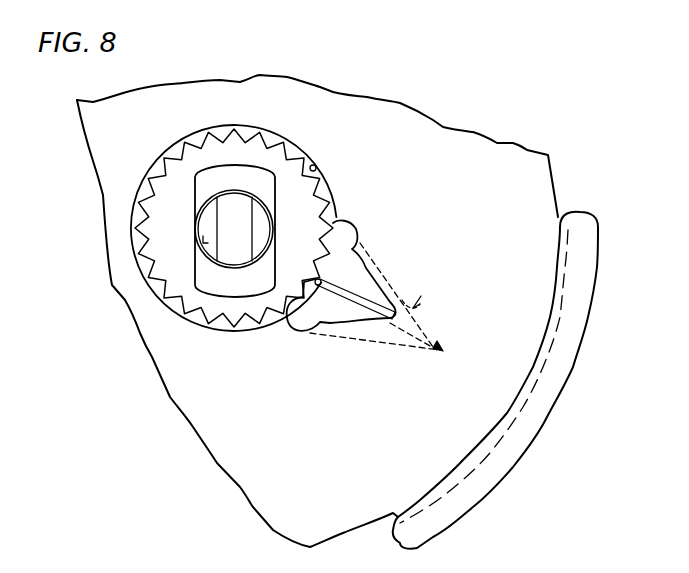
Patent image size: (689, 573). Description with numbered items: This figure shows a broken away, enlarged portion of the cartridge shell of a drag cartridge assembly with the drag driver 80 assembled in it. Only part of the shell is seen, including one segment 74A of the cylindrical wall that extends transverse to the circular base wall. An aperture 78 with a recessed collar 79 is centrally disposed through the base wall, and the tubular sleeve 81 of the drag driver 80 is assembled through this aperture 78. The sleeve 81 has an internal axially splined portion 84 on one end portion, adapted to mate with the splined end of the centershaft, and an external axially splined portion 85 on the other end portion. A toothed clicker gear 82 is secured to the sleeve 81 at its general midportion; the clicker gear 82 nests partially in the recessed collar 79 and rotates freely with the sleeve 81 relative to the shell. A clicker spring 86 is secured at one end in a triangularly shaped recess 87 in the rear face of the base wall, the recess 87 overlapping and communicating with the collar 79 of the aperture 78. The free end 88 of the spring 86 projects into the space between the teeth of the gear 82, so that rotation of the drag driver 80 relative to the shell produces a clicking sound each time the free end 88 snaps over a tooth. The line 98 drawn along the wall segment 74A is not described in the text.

The segment of cylindrical wall 74A is at (567, 343).
The aperture 78 is at (197, 249).
The recessed collar 79 is at (318, 168).
The drag driver 80 is at (278, 213).
The tubular sleeve 81 is at (237, 175).
The toothed clicker gear 82 is at (170, 228).
The internal axially splined portion 84 is at (248, 243).
The external axially splined portion 85 is at (275, 188).
The clicker spring 86 is at (358, 297).
The triangularly shaped recess 87 is at (425, 293).
The free end of spring 88 is at (318, 286).
The handle center line 98 is at (548, 315).